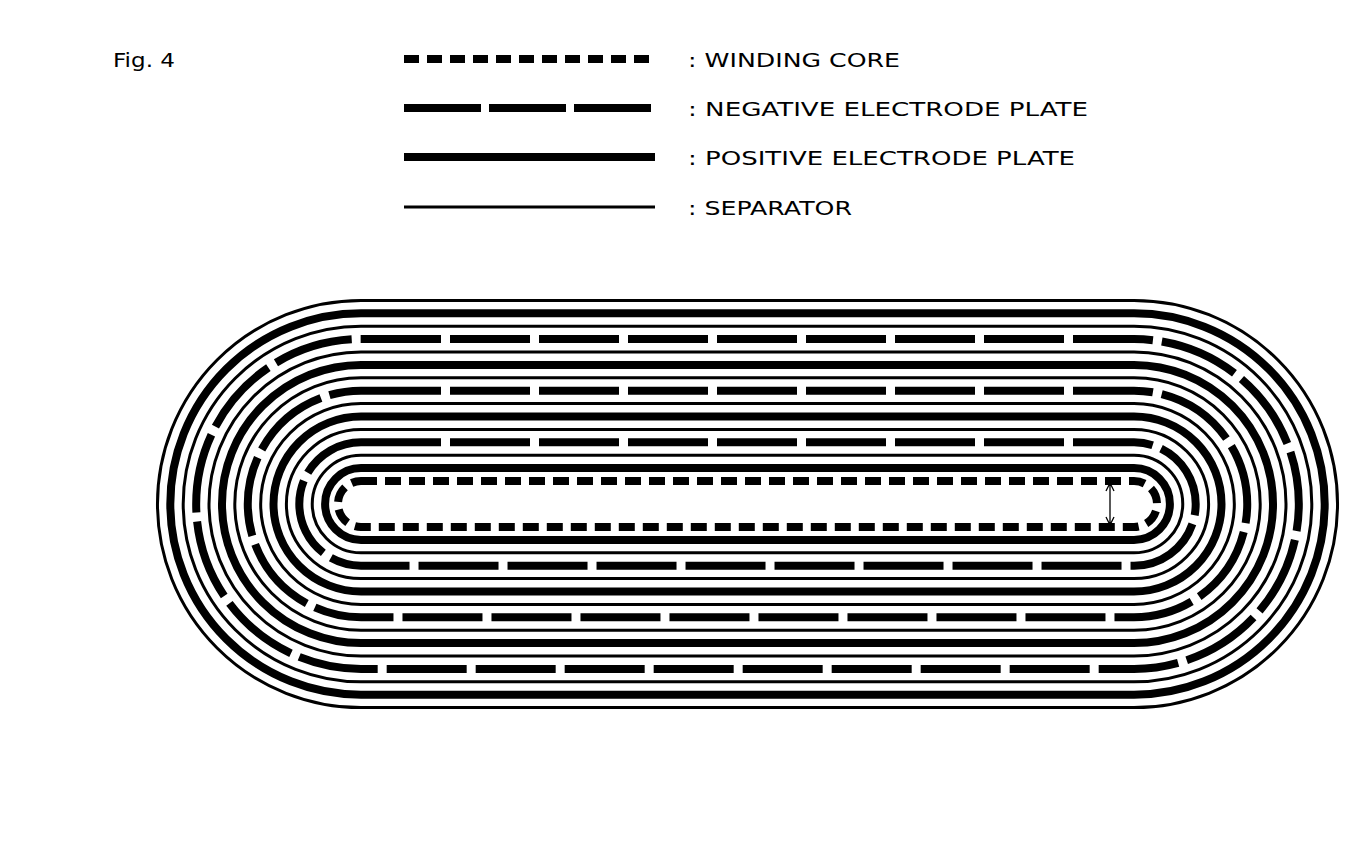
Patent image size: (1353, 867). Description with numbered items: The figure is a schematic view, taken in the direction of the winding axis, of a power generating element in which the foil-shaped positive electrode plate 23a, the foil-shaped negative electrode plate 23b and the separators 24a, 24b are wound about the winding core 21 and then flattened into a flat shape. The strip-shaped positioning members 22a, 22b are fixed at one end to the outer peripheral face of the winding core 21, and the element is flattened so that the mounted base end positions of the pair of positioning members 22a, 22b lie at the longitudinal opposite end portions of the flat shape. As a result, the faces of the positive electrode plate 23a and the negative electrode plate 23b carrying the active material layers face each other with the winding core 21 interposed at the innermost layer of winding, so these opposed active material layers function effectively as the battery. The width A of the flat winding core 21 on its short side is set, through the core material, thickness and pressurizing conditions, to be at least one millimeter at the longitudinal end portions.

The winding core 21 is at (476, 484).
The positioning member 22a is at (432, 446).
The positioning member 22b is at (1066, 560).
The foil-shaped positive electrode plate 23a is at (655, 455).
The foil-shaped negative electrode plate 23b is at (982, 538).
The separator 24a is at (653, 467).
The separator 24b is at (618, 710).
The width of the flat winding core A is at (1094, 504).